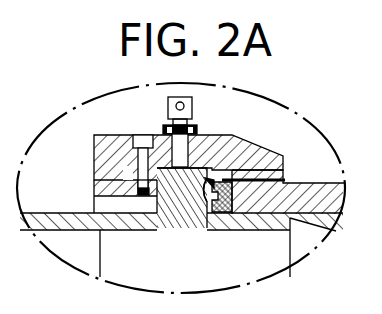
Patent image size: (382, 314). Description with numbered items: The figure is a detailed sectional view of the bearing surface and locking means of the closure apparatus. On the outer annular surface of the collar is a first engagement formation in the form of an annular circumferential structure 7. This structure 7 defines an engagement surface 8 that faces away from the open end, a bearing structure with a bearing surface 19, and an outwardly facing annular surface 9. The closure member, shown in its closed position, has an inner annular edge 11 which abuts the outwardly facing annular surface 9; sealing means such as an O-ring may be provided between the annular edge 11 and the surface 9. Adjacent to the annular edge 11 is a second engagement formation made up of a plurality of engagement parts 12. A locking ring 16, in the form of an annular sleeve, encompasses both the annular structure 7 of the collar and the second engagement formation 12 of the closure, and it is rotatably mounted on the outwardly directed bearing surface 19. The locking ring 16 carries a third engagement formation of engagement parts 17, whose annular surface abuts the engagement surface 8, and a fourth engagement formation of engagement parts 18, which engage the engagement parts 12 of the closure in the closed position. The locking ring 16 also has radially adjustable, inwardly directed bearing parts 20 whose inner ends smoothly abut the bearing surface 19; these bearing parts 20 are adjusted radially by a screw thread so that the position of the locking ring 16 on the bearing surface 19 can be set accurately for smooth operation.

The annular circumferential structure 7 is at (183, 193).
The engagement surface 8 is at (157, 206).
The outwardly facing annular surface 9 is at (207, 191).
The inner annular edge 11 is at (240, 215).
The engagement parts 12 is at (263, 157).
The locking ring 16 is at (93, 143).
The engagement parts 17 is at (93, 204).
The engagement parts 18 is at (286, 169).
The bearing surface 19 is at (197, 188).
The bearing parts 20 is at (193, 103).